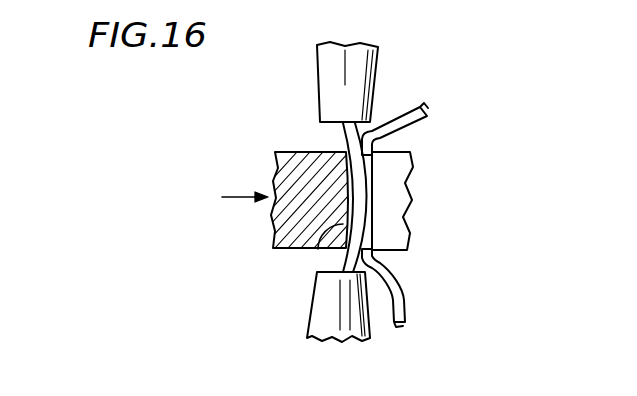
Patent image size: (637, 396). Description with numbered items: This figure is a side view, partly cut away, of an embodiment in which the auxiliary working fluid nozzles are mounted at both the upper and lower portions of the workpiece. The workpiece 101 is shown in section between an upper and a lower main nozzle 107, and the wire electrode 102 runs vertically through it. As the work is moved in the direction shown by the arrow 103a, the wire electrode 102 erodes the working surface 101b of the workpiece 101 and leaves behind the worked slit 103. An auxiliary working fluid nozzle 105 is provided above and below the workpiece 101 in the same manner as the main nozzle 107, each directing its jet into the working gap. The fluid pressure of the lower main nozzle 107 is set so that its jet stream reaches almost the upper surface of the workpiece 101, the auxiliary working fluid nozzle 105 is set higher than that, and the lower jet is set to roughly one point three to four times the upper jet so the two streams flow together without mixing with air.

The workpiece 101 is at (285, 228).
The working surface 101b is at (318, 249).
The wire electrode 102 is at (350, 138).
The worked slit 103 is at (390, 233).
The arrow indicative of the work moving direction 103a is at (236, 189).
The auxiliary working fluid nozzle 105 is at (423, 112).
The main nozzle 107 is at (325, 66).